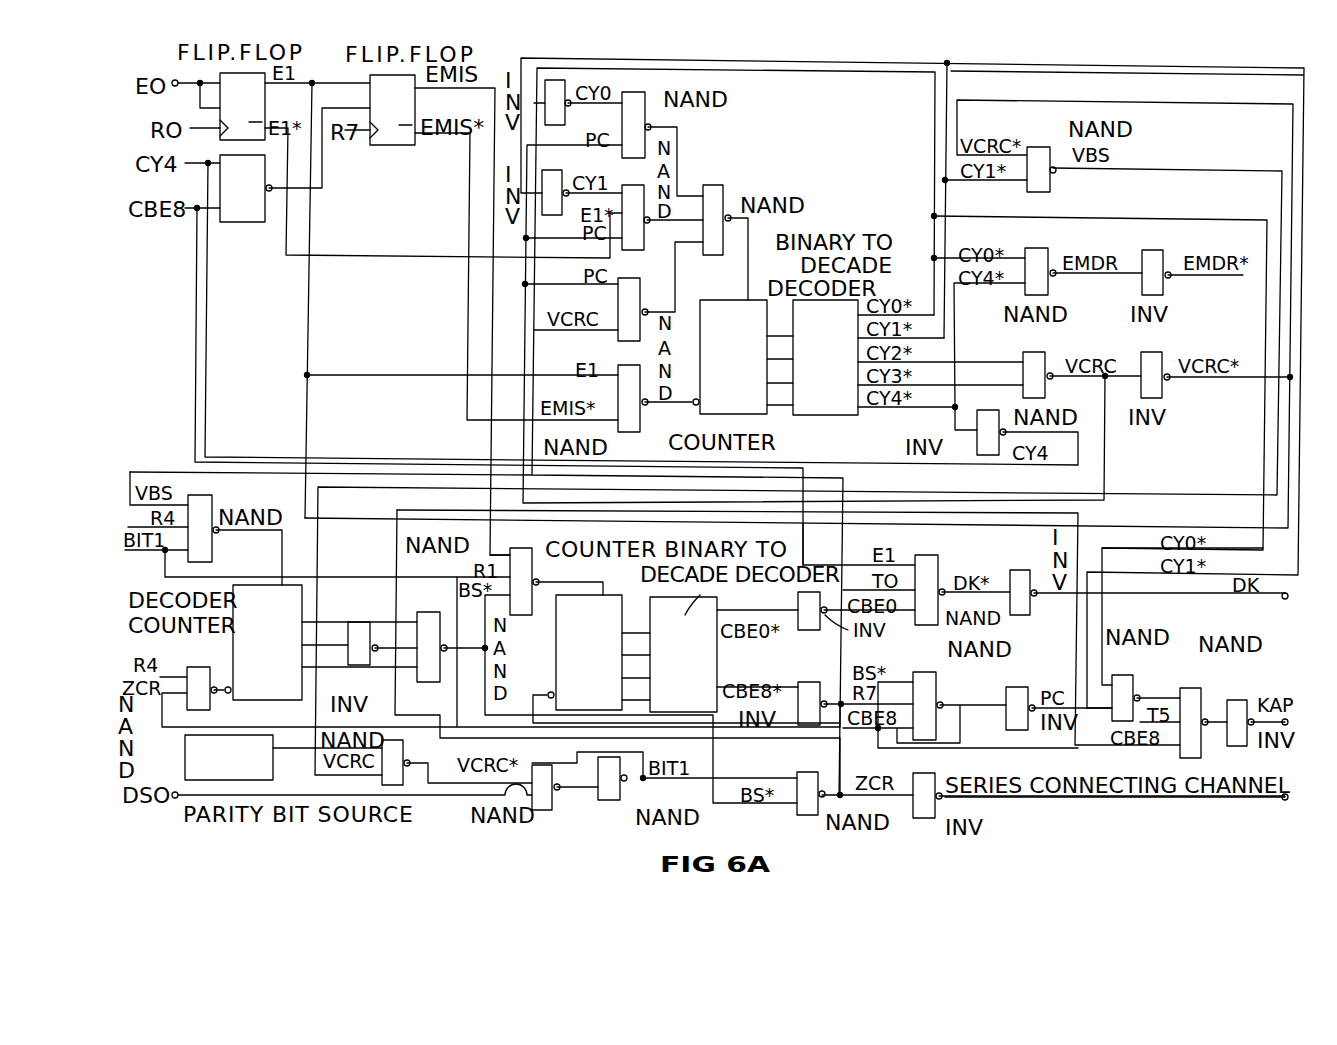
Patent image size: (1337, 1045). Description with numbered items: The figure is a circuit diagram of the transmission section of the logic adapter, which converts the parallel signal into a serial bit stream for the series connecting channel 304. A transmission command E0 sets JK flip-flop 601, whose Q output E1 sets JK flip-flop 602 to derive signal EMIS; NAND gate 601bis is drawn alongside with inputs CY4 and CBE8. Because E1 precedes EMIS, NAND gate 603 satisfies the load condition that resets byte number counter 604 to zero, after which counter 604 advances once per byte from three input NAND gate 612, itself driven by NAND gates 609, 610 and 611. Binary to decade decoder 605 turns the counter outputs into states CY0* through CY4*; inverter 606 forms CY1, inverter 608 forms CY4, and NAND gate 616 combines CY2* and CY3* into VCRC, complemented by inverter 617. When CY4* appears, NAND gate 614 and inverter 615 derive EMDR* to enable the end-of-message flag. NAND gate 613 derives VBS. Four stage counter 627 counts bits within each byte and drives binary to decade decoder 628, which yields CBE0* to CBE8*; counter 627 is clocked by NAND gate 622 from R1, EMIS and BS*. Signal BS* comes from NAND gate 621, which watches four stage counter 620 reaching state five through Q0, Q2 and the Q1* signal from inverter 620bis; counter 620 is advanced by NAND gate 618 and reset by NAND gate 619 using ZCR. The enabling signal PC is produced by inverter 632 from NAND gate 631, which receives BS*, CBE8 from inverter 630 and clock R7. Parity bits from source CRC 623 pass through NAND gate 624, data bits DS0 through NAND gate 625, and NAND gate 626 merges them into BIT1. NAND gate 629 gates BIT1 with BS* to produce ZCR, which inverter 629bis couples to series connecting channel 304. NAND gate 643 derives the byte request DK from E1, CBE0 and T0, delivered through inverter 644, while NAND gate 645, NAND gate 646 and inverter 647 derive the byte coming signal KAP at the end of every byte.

The JK flip-flop 601 is at (220, 122).
The NAND gate 601bis is at (225, 222).
The JK flip-flop 602 is at (382, 145).
The NAND gate 603 is at (645, 370).
The byte number counter 604 is at (735, 305).
The binary to decade decoder 605 is at (548, 100).
The inverter 606 is at (545, 192).
The inverter 608 is at (955, 445).
The NAND gate 609 is at (660, 95).
The NAND gate 610 is at (635, 212).
The NAND gate 611 is at (636, 300).
The three input NAND gate 612 is at (718, 205).
The NAND gate 613 is at (1038, 150).
The NAND gate 614 is at (1038, 255).
The inverter 615 is at (1152, 258).
The NAND gate 616 is at (1034, 360).
The inverter 617 is at (1152, 360).
The NAND gate 618 is at (220, 495).
The NAND gate 619 is at (135, 710).
The four stage counter 620 is at (267, 656).
The inverter 620bis is at (355, 625).
The NAND gate 621 is at (430, 560).
The NAND gate 622 is at (540, 550).
The source CRC 623 is at (190, 775).
The NAND gate 624 is at (390, 765).
The NAND gate 625 is at (535, 788).
The NAND gate 626 is at (608, 788).
The four stage counter 627 is at (605, 605).
The binary to decade decoder 628 is at (705, 715).
The NAND gate 629 is at (808, 790).
The inverter 629bis is at (935, 775).
The inverter 630 is at (812, 698).
The NAND gate 631 is at (958, 665).
The inverter 632 is at (1020, 700).
The NAND gate 643 is at (930, 575).
The inverter 644 is at (1018, 592).
The NAND gate 645 is at (1150, 655).
The NAND gate 646 is at (1208, 670).
The inverter 647 is at (1240, 720).
The series connecting channel 304 is at (1115, 815).